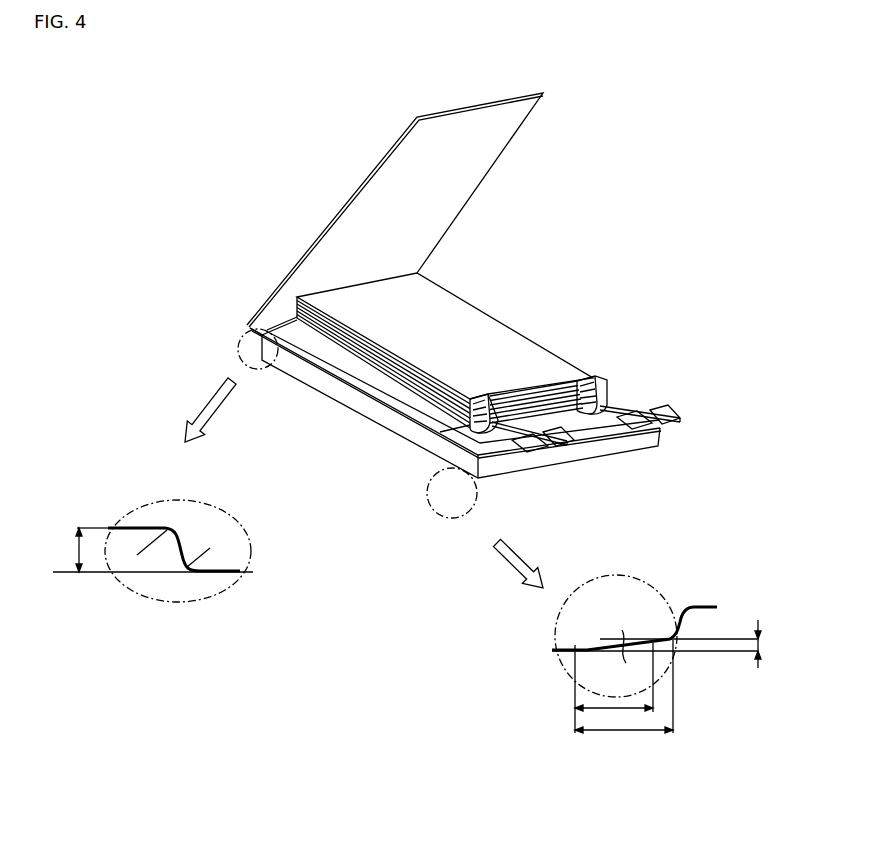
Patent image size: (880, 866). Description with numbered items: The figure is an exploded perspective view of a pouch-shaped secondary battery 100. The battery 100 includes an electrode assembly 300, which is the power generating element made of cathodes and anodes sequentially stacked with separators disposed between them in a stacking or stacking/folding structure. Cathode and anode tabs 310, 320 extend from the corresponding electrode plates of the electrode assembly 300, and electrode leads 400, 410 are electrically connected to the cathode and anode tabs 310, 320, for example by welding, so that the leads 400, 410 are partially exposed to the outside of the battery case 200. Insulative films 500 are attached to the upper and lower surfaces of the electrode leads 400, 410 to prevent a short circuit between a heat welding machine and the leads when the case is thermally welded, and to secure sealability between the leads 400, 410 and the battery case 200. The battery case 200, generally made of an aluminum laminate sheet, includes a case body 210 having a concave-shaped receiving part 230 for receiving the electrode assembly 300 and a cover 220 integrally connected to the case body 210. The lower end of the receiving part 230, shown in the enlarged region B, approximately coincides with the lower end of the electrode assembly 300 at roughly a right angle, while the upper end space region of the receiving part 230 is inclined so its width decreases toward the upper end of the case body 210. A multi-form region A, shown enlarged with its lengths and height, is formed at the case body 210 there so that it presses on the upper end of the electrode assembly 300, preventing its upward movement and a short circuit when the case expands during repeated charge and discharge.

The pouch-shaped secondary battery 100 is at (182, 133).
The battery case 200 is at (238, 283).
The case body 210 is at (373, 405).
The cover 220 is at (325, 226).
The receiving part 230 is at (358, 368).
The electrode assembly 300 is at (508, 292).
The cathode tab 310 is at (597, 398).
The anode tab 320 is at (440, 439).
The electrode lead 400 is at (663, 420).
The electrode lead 410 is at (538, 449).
The insulative film 500 is at (550, 447).